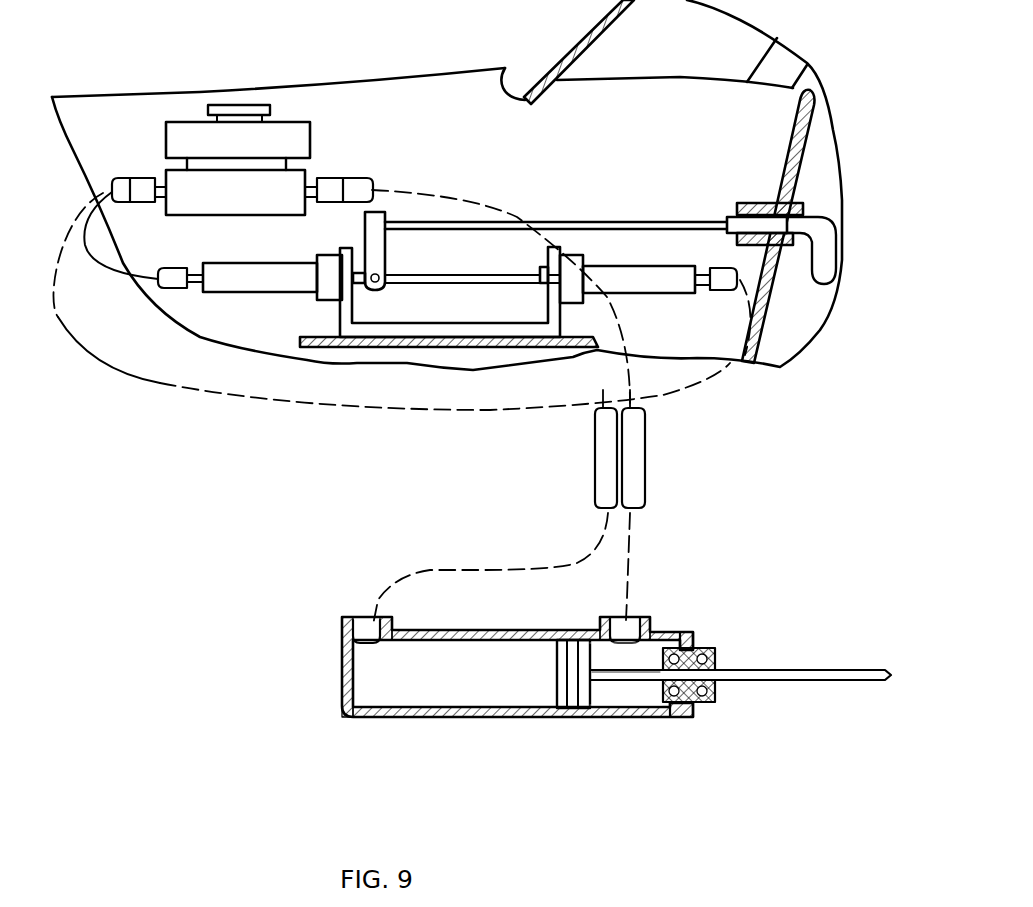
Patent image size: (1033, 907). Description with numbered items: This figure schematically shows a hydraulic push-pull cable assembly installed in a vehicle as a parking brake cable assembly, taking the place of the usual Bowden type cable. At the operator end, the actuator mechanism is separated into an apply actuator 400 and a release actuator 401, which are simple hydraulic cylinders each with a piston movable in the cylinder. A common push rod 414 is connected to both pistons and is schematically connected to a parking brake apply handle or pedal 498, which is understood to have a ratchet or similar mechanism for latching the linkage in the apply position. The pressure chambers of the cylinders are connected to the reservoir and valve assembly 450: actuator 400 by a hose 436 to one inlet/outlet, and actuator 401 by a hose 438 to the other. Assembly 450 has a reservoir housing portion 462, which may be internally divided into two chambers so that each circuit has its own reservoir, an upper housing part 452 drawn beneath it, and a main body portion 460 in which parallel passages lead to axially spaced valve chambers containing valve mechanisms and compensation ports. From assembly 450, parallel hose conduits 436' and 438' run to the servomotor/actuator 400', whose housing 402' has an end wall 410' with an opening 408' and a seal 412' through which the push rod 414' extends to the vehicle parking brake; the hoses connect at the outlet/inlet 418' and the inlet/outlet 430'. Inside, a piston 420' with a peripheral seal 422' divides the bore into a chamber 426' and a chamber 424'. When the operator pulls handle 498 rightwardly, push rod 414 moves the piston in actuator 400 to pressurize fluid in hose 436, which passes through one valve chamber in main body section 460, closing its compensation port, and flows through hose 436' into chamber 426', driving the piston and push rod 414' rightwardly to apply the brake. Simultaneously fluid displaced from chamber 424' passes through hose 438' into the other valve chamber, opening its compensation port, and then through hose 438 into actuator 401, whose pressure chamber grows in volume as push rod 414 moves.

The reservoir and valve assembly 450 is at (172, 101).
The reservoir housing portion 462 is at (278, 132).
The valve block 452 is at (309, 151).
The main body portion 460 is at (275, 192).
The hose 438 is at (155, 318).
The release actuator 401 is at (246, 292).
The push rod 414 is at (472, 342).
The apply actuator 400 is at (635, 308).
The hose 436 is at (705, 312).
The parking brake apply handle or pedal 498 is at (830, 272).
The hose conduit 436' is at (564, 458).
The hose conduit 438' is at (688, 458).
The outlet/inlet 418' is at (350, 594).
The inlet/outlet 430' is at (672, 604).
The end wall 410' is at (732, 657).
The seal 412' is at (744, 649).
The servomotor/actuator 400' is at (473, 667).
The housing 402' is at (466, 690).
The chamber 426' is at (453, 722).
The piston 420' is at (542, 709).
The peripheral seal 422' is at (570, 722).
The chamber 424' is at (635, 714).
The opening 408' is at (698, 719).
The push rod 414' is at (740, 712).